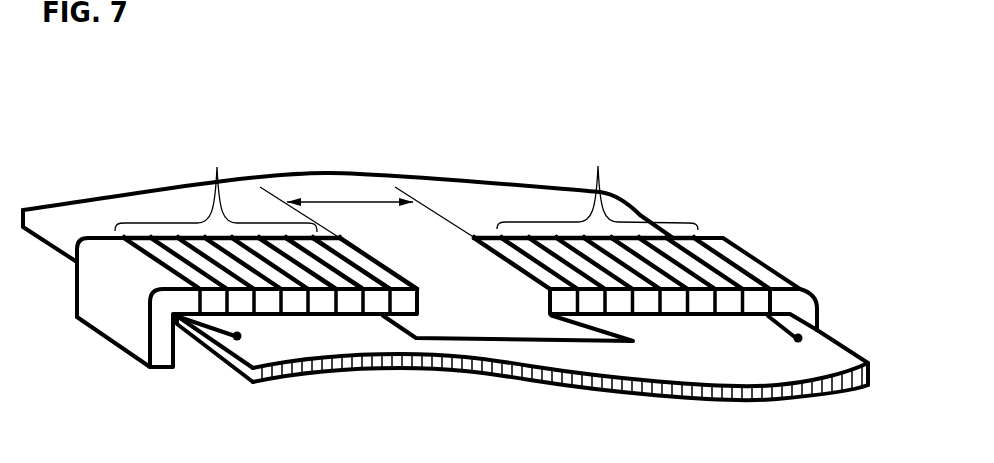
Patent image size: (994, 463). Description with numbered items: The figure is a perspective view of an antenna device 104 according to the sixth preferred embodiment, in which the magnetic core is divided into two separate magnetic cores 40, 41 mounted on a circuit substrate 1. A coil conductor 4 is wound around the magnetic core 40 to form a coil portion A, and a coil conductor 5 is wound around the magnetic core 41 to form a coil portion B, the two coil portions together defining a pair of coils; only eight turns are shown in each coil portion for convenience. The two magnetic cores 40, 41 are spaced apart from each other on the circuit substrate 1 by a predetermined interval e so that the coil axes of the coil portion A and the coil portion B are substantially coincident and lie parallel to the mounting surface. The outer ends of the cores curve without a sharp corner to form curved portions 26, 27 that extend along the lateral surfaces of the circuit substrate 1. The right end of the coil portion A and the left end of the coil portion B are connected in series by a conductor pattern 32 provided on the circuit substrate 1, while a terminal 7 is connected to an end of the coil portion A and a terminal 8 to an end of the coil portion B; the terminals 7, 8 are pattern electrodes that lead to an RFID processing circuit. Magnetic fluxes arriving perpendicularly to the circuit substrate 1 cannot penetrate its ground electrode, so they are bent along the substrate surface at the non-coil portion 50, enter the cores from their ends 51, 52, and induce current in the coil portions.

The antenna device 104 is at (78, 70).
The circuit substrate 1 is at (100, 220).
The curved portion 26 is at (95, 265).
The curved portion 27 is at (750, 262).
The coil conductor 4 is at (303, 310).
The coil conductor 5 is at (712, 308).
The magnetic core 40 is at (372, 310).
The magnetic core 41 is at (565, 308).
The end of magnetic core 51 is at (393, 265).
The end of magnetic core 52 is at (503, 270).
The non-coil portion 50 is at (451, 267).
The conductor pattern 32 is at (502, 341).
The terminal 7 is at (235, 337).
The terminal 8 is at (796, 340).